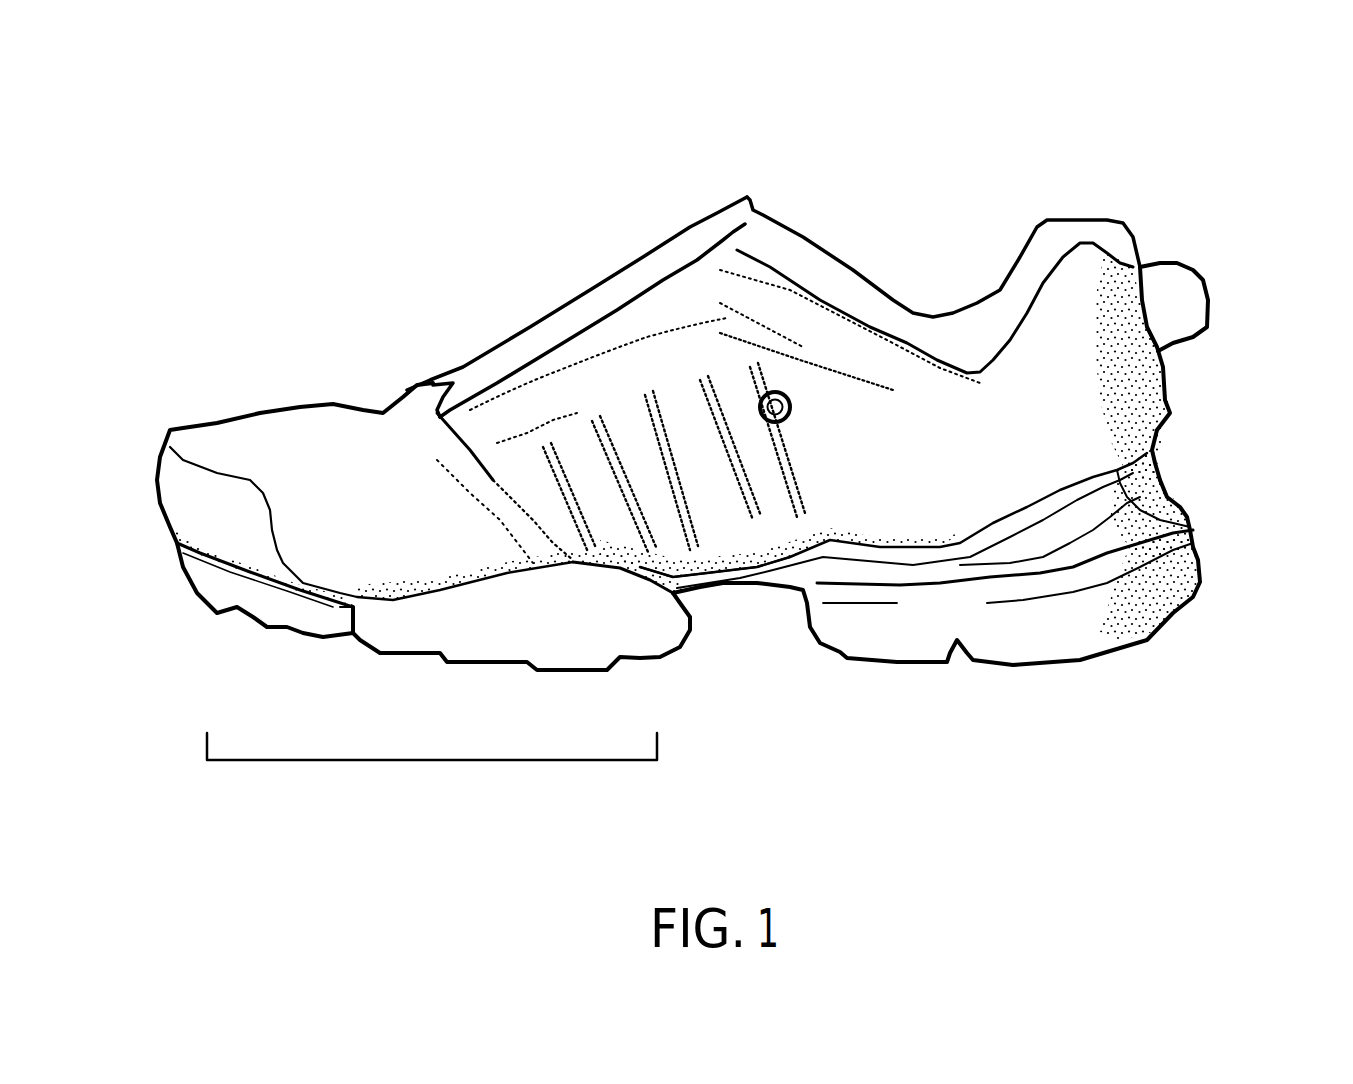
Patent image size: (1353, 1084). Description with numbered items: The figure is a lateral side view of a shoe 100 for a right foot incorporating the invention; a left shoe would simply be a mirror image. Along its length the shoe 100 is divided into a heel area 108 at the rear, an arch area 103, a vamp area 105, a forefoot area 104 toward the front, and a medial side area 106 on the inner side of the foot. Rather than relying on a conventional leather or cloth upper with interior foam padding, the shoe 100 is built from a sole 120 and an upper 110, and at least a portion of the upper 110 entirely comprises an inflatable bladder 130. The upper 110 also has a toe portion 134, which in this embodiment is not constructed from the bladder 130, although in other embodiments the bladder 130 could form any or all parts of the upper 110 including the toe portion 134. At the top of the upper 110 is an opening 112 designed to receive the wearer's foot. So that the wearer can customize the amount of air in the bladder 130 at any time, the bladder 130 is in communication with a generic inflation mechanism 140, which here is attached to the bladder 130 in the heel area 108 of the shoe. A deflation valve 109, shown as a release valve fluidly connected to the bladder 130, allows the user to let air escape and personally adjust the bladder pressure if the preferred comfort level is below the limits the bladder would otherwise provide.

The shoe 100 is at (247, 253).
The arch area 103 is at (758, 648).
The forefoot area 104 is at (423, 760).
The vamp area 105 is at (600, 347).
The medial side area 106 is at (587, 420).
The heel area 108 is at (1113, 211).
The deflation valve 109 is at (795, 415).
The upper 110 is at (403, 400).
The opening 112 is at (967, 333).
The sole 120 is at (403, 630).
The inflatable bladder 130 is at (710, 307).
The toe portion 134 is at (250, 440).
The inflation mechanism 140 is at (1183, 293).